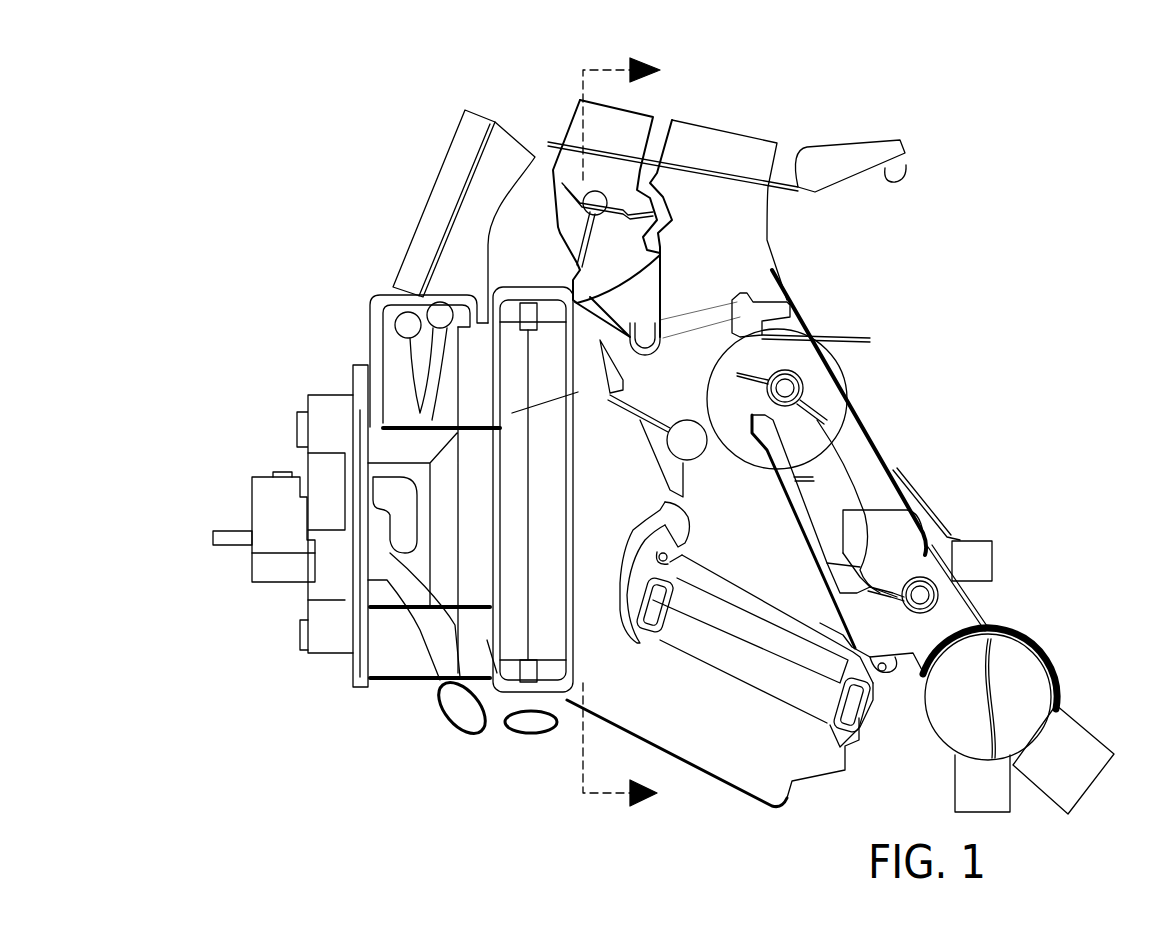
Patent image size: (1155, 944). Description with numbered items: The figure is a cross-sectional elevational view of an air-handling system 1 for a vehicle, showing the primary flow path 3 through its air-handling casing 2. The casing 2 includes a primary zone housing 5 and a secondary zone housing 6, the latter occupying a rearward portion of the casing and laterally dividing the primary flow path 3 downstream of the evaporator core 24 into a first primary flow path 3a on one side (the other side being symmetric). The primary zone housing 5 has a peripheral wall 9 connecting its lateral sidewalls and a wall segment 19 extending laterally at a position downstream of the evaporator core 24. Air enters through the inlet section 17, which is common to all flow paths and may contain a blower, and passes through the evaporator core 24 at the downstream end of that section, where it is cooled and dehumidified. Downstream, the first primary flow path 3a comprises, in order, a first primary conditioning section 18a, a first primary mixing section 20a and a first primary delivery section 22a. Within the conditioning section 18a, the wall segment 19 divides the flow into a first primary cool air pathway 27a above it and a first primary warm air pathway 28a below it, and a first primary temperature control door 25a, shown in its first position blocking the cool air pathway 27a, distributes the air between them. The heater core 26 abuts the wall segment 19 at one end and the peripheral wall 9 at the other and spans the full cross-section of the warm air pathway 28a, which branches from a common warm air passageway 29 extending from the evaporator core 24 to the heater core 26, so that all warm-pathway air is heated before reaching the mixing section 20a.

The air-handling system 1 is at (265, 125).
The air-handling casing 2 is at (808, 316).
The primary flow path 3 is at (621, 434).
The first primary flow path 3a is at (695, 330).
The primary zone housing 5 is at (575, 118).
The secondary zone housing 6 is at (1045, 638).
The peripheral wall 9 is at (673, 762).
The inlet section 17 is at (480, 492).
The first primary conditioning section 18a is at (510, 583).
The wall segment 19 is at (613, 585).
The first primary mixing section 20a is at (696, 392).
The first primary delivery section 22a is at (716, 215).
The evaporator core 24 is at (588, 533).
The first primary temperature control door 25a is at (826, 420).
The heater core 26 is at (760, 670).
The first primary cool air pathway 27a is at (588, 461).
The first primary warm air pathway 28a is at (770, 535).
The warm air passageway 29 is at (718, 765).